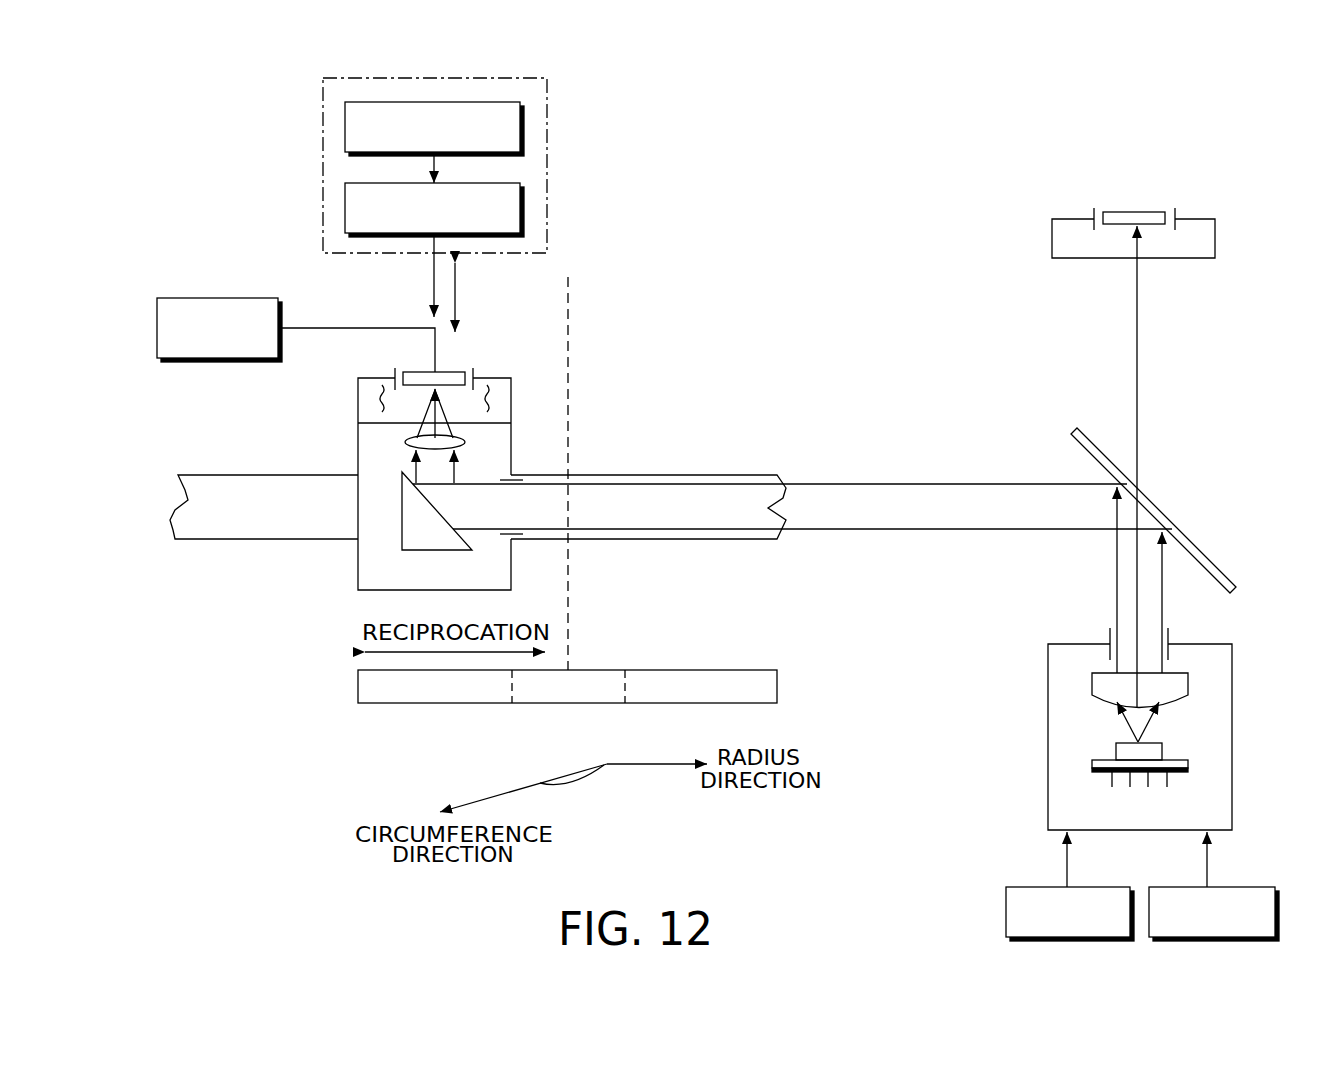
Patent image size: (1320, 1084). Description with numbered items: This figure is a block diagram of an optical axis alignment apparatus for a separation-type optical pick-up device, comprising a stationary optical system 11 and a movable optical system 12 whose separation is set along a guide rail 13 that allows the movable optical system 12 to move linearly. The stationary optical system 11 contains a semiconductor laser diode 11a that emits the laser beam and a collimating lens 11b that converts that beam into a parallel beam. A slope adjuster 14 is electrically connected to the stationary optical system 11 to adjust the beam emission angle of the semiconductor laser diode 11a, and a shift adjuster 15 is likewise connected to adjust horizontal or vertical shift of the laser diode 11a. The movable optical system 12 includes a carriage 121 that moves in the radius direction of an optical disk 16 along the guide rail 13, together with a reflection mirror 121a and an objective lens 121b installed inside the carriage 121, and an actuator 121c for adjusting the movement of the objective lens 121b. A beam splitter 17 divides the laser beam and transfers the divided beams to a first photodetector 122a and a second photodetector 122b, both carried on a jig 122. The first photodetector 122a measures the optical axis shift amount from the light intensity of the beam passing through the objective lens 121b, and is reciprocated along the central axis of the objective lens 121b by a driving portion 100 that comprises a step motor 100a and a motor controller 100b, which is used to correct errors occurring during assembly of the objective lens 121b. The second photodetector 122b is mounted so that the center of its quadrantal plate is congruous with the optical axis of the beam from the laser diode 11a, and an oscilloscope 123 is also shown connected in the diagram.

The driving portion 100 is at (323, 192).
The step motor 100a is at (520, 215).
The motor controller 100b is at (520, 132).
The oscilloscope 123 is at (206, 298).
The jig 122 is at (358, 403).
The first photodetector 122a is at (438, 372).
The second photodetector 122b is at (1125, 212).
The actuator 121c is at (380, 393).
The objective lens 121b is at (397, 440).
The reflection mirror 121a is at (437, 550).
The carriage 121 is at (358, 521).
The movable optical system 12 is at (385, 590).
The guide rail 13 is at (637, 540).
The optical disk 16 is at (778, 698).
The beam splitter 17 is at (1210, 558).
The stationary optical system 11 is at (1048, 718).
The collimating lens 11b is at (1188, 688).
The semiconductor laser diode 11a is at (1163, 755).
The shift adjuster 15 is at (1025, 887).
The slope adjuster 14 is at (1243, 887).